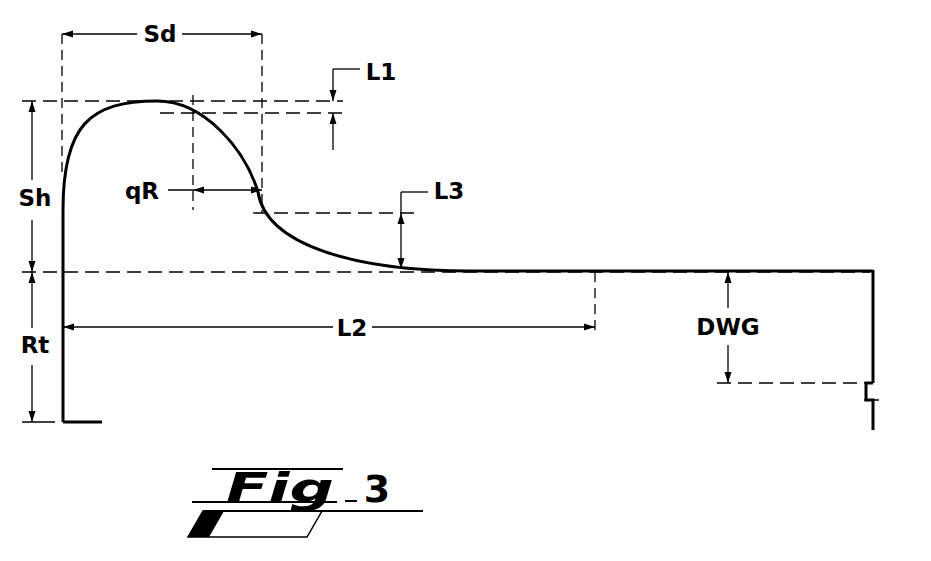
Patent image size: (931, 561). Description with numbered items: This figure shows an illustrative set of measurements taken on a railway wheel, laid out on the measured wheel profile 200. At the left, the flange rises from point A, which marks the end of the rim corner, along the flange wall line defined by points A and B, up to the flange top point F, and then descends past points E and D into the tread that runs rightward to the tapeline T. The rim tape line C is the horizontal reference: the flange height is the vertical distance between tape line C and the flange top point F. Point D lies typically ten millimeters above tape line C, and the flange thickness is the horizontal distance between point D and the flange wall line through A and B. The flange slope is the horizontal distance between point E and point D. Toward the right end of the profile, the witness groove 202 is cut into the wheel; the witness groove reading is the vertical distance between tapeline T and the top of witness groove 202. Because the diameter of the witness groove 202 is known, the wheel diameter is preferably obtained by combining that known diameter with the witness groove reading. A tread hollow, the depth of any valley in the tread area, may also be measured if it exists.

The bulb-shaped end profile of fiber 200 is at (472, 268).
The witness groove 202 is at (856, 404).
The point A is at (82, 448).
The point B is at (446, 256).
The rim tape line C is at (593, 286).
The point D is at (334, 194).
The point E is at (176, 152).
The flange top point F is at (182, 83).
The tapeline T is at (873, 309).